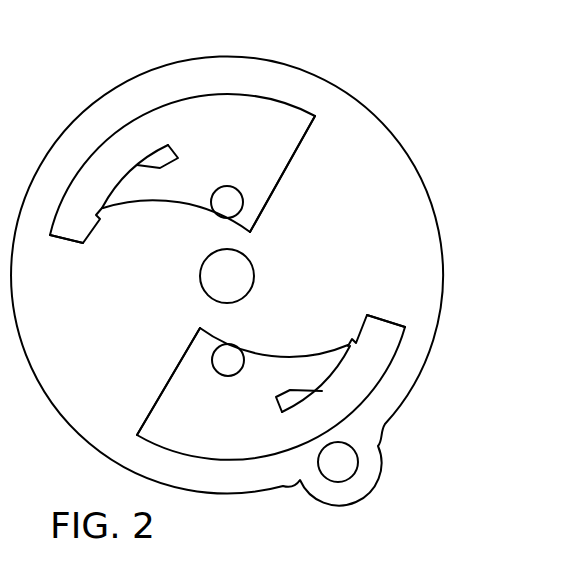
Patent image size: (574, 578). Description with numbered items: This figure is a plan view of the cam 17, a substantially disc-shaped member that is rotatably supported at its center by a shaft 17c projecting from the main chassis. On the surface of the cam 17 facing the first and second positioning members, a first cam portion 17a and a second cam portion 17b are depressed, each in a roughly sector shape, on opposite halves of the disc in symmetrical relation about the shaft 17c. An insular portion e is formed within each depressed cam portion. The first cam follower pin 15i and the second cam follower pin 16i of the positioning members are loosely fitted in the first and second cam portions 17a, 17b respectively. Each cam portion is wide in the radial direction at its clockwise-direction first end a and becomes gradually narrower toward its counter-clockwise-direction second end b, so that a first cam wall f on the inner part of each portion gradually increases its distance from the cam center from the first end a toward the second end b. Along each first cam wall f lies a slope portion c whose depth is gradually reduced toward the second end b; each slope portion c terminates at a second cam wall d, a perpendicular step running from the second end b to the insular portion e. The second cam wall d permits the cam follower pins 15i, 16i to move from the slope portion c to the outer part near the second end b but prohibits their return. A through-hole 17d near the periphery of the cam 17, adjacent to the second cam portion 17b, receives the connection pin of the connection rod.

The cam 17 is at (442, 243).
The first cam portion 17a is at (218, 107).
The second cam portion 17b is at (248, 448).
The shaft 17c is at (255, 272).
The through-hole 17d is at (347, 450).
The first cam follower pin 15i is at (230, 187).
The second cam follower pin 16i is at (226, 377).
The first end a is at (260, 208).
The second end b is at (66, 230).
The slope portion c is at (137, 194).
The second cam wall d is at (115, 184).
The insular portion e is at (168, 147).
The first cam wall f is at (178, 202).